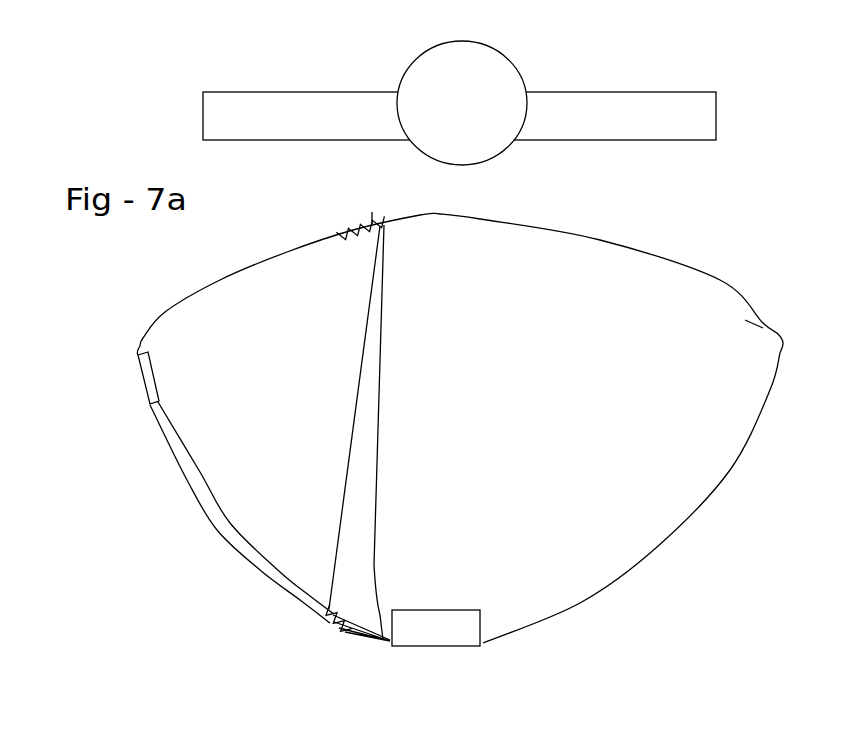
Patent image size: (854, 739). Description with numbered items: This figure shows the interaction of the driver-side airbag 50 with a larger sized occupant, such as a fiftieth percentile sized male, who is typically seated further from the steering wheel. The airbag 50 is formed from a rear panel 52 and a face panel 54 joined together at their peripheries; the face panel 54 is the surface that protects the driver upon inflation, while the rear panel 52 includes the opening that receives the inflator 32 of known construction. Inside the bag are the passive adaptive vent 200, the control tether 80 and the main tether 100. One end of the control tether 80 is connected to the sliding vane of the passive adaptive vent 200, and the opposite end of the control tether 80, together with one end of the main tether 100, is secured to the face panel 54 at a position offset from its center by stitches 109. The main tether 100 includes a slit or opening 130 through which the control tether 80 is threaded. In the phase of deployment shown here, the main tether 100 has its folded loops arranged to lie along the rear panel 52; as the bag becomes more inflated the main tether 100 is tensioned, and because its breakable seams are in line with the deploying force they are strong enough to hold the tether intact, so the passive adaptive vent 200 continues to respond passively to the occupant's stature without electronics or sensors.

The inflator 32 is at (420, 633).
The airbag 50 is at (377, 573).
The rear panel 52 is at (216, 523).
The face panel 54 is at (165, 313).
The control tether 80 is at (208, 497).
The main tether 100 is at (378, 640).
The stitches 109 is at (362, 225).
The slit or opening 130 is at (357, 640).
The passive adaptive vent 200 is at (142, 387).